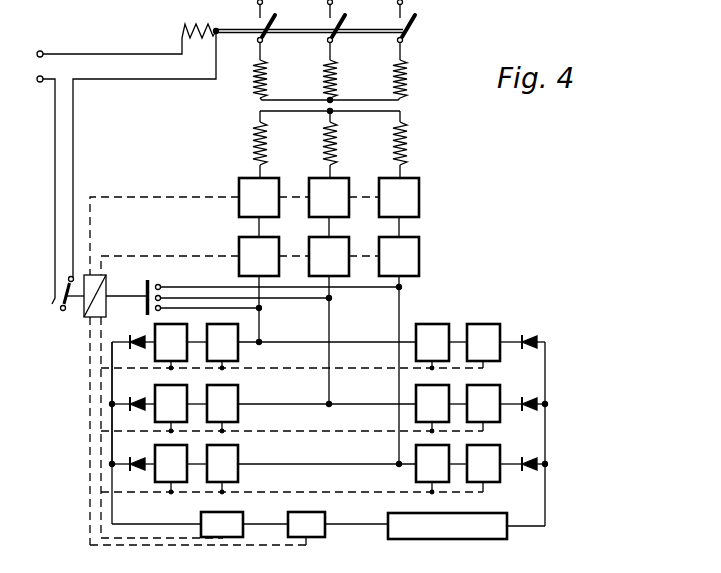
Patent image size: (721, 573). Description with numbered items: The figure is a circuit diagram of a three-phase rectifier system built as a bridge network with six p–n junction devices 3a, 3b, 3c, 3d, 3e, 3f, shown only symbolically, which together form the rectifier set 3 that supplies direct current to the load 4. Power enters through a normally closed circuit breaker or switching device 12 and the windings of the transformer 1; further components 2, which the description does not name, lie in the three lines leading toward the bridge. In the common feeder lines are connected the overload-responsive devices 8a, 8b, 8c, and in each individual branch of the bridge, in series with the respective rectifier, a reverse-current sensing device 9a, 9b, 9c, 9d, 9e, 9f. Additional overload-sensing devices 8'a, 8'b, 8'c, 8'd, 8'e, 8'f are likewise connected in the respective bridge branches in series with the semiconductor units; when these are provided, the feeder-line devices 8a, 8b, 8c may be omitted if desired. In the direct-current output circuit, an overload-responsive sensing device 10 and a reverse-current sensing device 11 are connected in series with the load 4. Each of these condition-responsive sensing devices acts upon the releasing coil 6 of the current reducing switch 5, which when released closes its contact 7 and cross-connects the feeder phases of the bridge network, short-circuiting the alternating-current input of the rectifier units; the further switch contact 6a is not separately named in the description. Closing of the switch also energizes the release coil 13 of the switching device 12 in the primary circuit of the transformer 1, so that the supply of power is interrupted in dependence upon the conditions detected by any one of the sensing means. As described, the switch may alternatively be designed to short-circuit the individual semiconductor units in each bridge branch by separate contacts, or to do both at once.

The transformer 1 is at (245, 121).
The load resistors 2 is at (340, 144).
The set of rectifier units 3 is at (85, 407).
The p–n junction device 3a is at (136, 334).
The p–n junction device 3b is at (136, 395).
The p–n junction device 3c is at (135, 455).
The p–n junction device 3d is at (529, 334).
The p–n junction device 3e is at (529, 395).
The p–n junction device 3f is at (528, 455).
The load 4 is at (447, 515).
The current reducing switch 5 is at (127, 298).
The releasing coil 6 is at (85, 285).
The switch contact 6a is at (57, 319).
The contact 7 is at (278, 288).
The overload-responsive device 8a is at (259, 197).
The overload-responsive device 8b is at (329, 197).
The overload-responsive device 8c is at (399, 197).
The additional overload-sensing device 8'a is at (222, 342).
The additional overload-sensing device 8'b is at (222, 403).
The additional overload-sensing device 8'c is at (222, 463).
The additional overload-sensing device 8'd is at (432, 342).
The additional overload-sensing device 8'e is at (432, 403).
The additional overload-sensing device 8'f is at (432, 463).
The reverse-current sensing device 9a is at (217, 299).
The reverse-current sensing device 9b is at (252, 329).
The reverse-current sensing device 9c is at (287, 359).
The reverse-current sensing device 9d is at (483, 342).
The reverse-current sensing device 9e is at (483, 403).
The reverse-current sensing device 9f is at (483, 463).
The overload-responsive sensing device 10 is at (222, 514).
The reverse-current sensing device 11 is at (306, 514).
The circuit breaker 12 is at (327, 22).
The release coil 13 is at (200, 20).